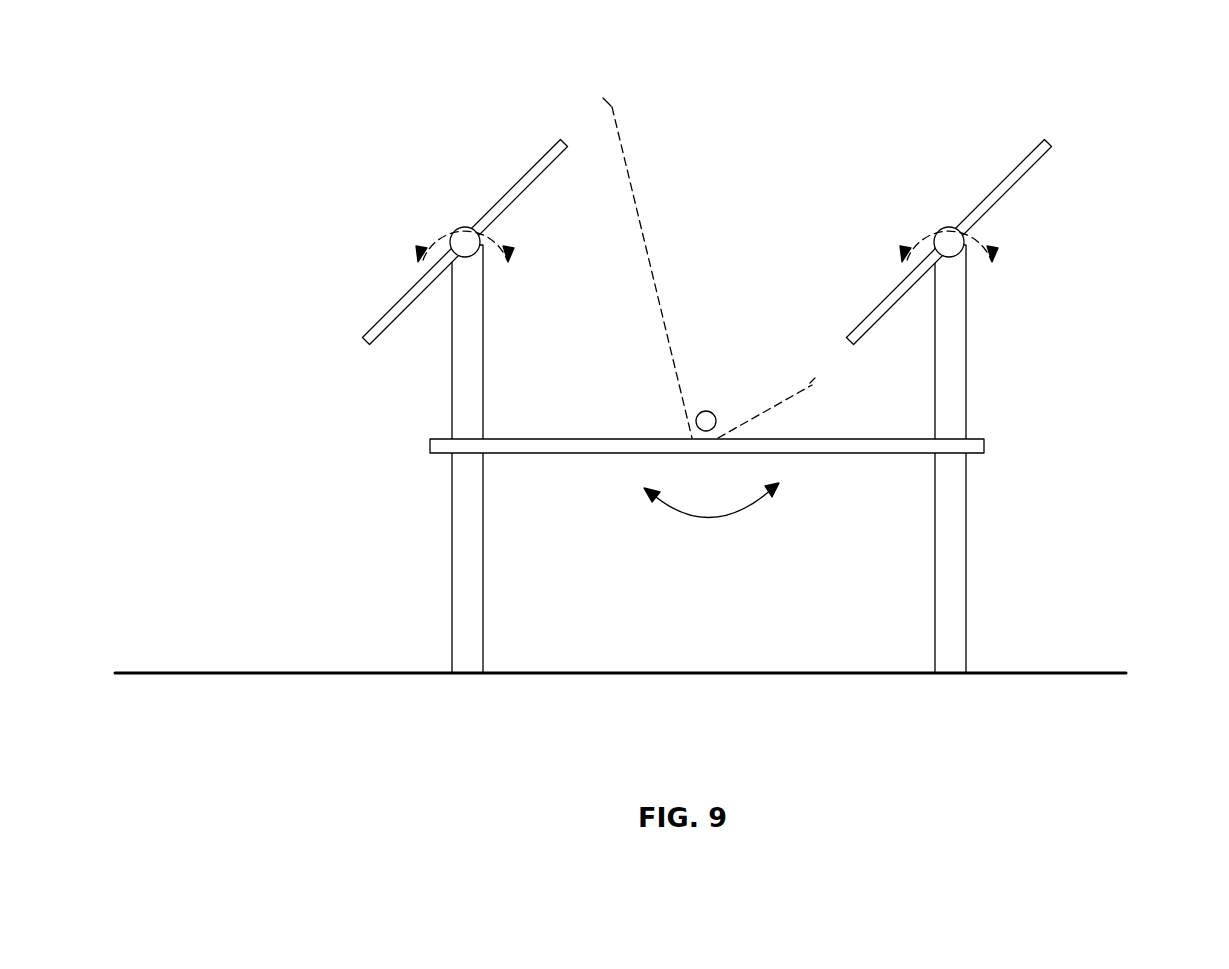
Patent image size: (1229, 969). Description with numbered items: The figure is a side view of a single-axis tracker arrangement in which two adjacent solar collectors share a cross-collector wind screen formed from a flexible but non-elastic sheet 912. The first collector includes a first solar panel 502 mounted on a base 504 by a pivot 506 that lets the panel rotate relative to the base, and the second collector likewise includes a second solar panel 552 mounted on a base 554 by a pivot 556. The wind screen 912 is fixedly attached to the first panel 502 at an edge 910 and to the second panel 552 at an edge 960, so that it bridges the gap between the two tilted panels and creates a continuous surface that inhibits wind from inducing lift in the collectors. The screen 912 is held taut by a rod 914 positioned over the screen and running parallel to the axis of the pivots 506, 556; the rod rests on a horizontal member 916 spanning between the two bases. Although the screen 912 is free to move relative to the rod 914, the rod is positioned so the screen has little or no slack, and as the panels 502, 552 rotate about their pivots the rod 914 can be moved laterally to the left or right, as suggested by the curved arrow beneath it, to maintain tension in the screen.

The first solar panel 502 is at (374, 318).
The base 504 is at (452, 537).
The pivot 506 is at (432, 205).
The second solar panel 552 is at (1057, 122).
The base 554 is at (933, 622).
The pivot 556 is at (965, 243).
The edge 910 is at (607, 93).
The sheet 912 is at (652, 193).
The rod 914 is at (702, 410).
The cross beam 916 is at (525, 457).
The edge 960 is at (808, 373).